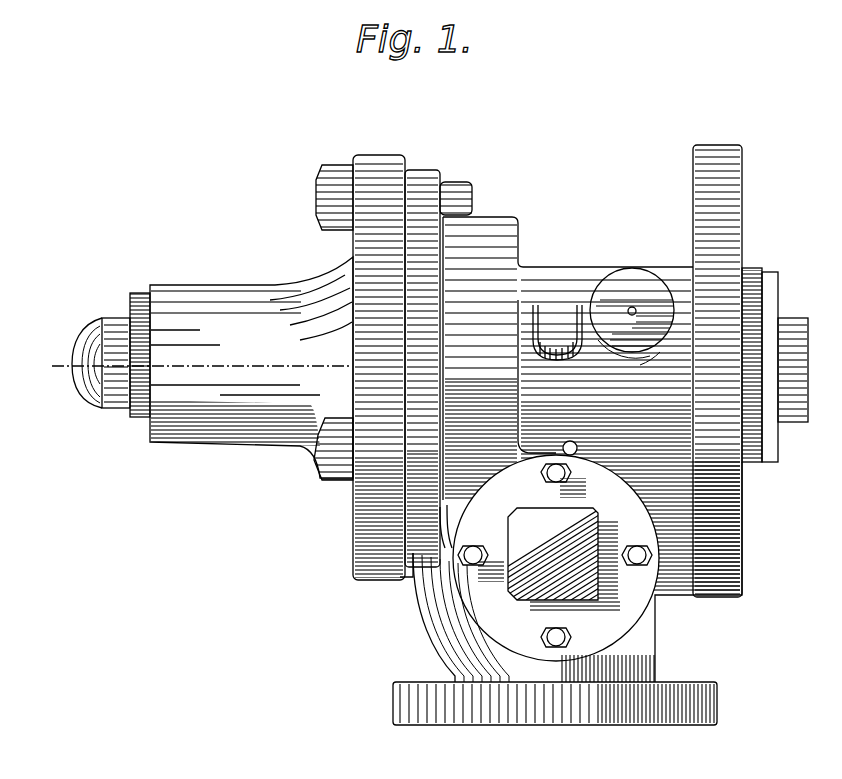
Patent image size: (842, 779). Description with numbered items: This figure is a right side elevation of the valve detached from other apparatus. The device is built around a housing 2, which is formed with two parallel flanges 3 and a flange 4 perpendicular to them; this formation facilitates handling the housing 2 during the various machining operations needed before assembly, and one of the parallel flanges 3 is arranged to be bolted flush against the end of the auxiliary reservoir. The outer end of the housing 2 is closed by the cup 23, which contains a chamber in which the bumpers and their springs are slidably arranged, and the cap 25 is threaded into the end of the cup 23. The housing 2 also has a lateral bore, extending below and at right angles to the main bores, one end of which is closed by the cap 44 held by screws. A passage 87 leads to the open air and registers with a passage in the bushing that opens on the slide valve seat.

The casing 2 is at (567, 272).
The flange / section line 3- 3 is at (432, 178).
The base 4 is at (718, 703).
The bearing housing 23 is at (246, 357).
The shaft end 25 is at (109, 410).
The cover plate 44 is at (516, 631).
The plug 87 is at (632, 311).